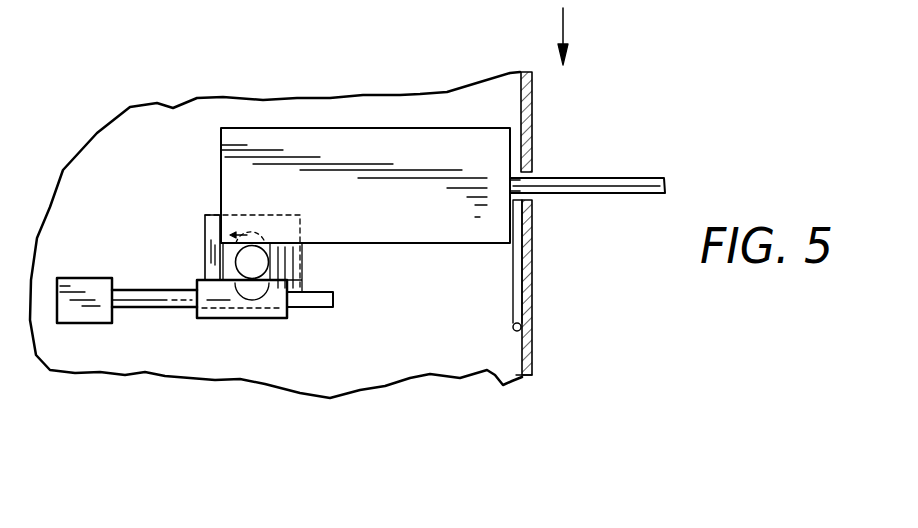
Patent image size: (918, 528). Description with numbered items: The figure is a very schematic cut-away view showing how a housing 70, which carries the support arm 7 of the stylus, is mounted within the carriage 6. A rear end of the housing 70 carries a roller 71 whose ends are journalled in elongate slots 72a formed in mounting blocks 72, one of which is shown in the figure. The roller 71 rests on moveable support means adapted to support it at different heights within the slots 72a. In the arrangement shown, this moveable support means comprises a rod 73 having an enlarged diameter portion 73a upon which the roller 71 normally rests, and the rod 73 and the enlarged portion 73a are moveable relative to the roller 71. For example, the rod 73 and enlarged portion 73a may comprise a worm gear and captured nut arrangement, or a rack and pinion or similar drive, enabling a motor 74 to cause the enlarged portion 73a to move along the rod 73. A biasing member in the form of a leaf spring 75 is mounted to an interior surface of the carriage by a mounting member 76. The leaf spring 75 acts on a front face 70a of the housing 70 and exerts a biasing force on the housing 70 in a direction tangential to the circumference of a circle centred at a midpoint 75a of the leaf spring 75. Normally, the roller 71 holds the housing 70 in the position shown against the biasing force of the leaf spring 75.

The carriage 6 is at (532, 128).
The support arm 7 is at (632, 178).
The housing 70 is at (335, 147).
The front face 70a is at (537, 203).
The roller 71 is at (252, 262).
The mounting block 72 is at (205, 260).
The elongate slot 72a is at (217, 233).
The rod 73 is at (163, 322).
The enlarged diameter portion 73a is at (222, 320).
The motor 74 is at (72, 323).
The leaf spring 75 is at (520, 307).
The midpoint 75a is at (517, 265).
The mounting member 76 is at (512, 328).